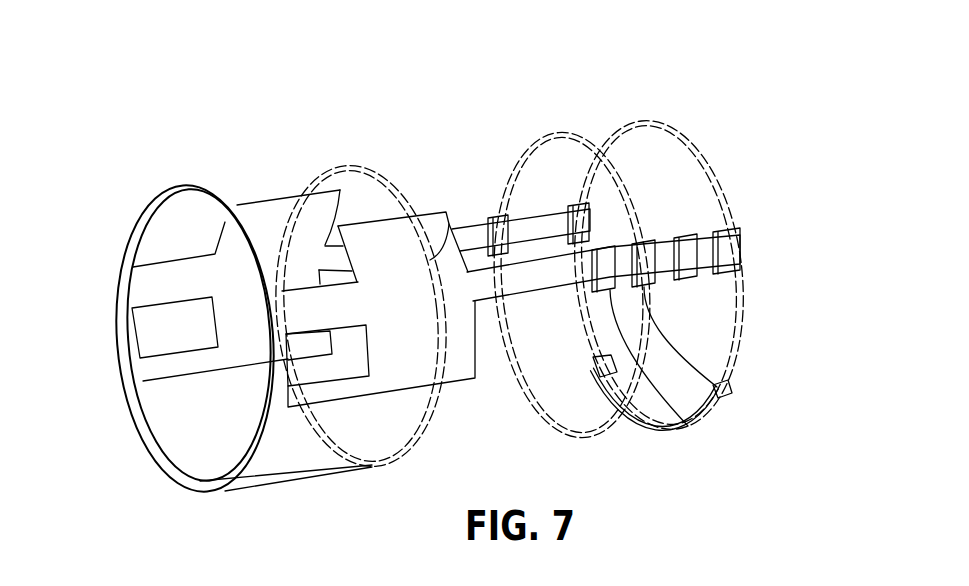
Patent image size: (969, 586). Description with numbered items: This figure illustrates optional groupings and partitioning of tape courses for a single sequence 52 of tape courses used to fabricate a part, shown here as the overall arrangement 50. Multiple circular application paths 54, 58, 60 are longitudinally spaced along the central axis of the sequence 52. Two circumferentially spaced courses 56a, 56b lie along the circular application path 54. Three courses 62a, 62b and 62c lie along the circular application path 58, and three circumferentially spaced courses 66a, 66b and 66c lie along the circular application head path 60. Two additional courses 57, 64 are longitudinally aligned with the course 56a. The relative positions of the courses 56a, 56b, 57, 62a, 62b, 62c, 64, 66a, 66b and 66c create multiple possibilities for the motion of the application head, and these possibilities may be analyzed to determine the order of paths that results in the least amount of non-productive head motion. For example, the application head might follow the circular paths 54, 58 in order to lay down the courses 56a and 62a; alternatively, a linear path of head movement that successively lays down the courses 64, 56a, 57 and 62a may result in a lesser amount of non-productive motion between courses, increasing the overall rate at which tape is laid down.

The support assembly 50 is at (702, 94).
The sequence 52 is at (158, 287).
The circular application path 54 is at (576, 136).
The tape course 56a is at (653, 287).
The tape course 56b is at (505, 238).
The tape course 57 is at (690, 276).
The circular application path 58 is at (717, 165).
The circular application head path 60 is at (340, 167).
The tape course 62a is at (744, 248).
The tape course 62b is at (586, 211).
The tape course 62c is at (676, 428).
The tape course 64 is at (707, 395).
The tape course 66a is at (447, 212).
The tape course 66b is at (285, 225).
The tape course 66c is at (394, 466).